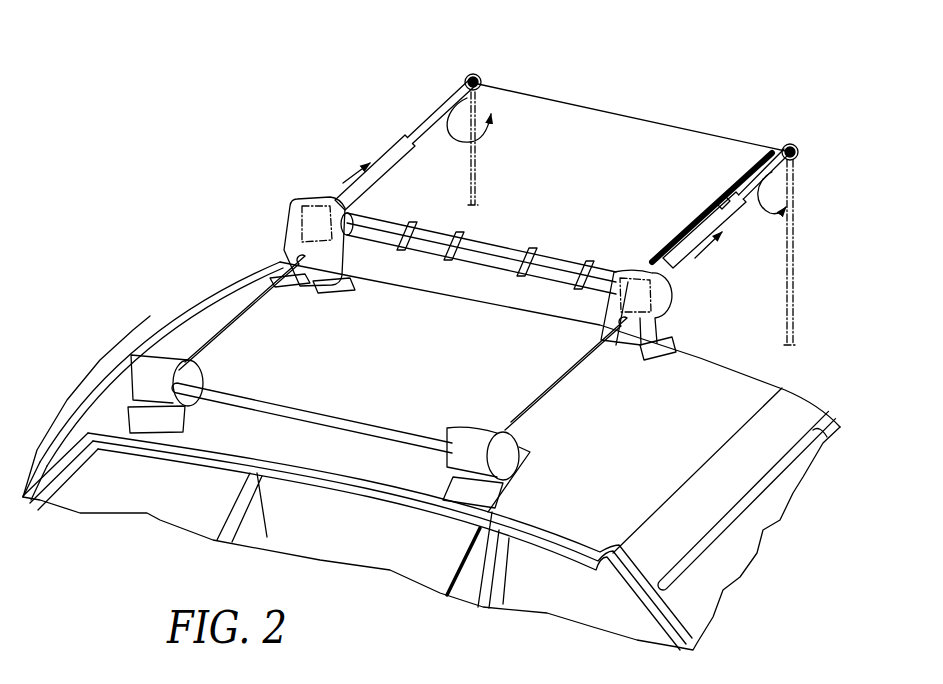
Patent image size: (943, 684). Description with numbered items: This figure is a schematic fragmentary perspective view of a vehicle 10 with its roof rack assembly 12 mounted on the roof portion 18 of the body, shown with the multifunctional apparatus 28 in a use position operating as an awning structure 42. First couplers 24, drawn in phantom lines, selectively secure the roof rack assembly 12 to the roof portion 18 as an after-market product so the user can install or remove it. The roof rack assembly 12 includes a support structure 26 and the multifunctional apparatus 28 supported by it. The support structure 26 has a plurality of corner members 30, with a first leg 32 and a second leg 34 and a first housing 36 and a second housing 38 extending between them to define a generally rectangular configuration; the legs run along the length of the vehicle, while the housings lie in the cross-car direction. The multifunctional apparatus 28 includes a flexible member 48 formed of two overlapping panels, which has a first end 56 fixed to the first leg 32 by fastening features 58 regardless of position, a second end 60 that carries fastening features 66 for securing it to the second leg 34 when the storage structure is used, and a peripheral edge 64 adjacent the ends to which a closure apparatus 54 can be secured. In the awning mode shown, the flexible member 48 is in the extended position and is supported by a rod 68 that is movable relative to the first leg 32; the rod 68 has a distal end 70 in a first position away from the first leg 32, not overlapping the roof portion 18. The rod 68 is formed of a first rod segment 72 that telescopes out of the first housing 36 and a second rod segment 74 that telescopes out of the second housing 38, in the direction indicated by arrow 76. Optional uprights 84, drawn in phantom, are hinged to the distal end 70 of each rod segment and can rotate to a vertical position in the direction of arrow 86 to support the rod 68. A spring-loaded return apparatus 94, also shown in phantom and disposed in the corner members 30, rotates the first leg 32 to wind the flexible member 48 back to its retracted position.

The vehicle 10 is at (736, 621).
The roof rack assembly 12 is at (105, 330).
The roof portion 18 is at (663, 470).
The first couplers 24 is at (133, 395).
The support structure 26 is at (268, 236).
The multifunctional apparatus 28 is at (235, 172).
The corner members 30 is at (314, 197).
The first leg 32 is at (497, 268).
The second leg 34 is at (345, 417).
The first housing 36 is at (572, 405).
The second housing 38 is at (252, 314).
The awning structure 42 is at (715, 75).
The flexible member 48 is at (535, 108).
The closure apparatus 54 is at (775, 150).
The first end 56 is at (443, 240).
The fastening features 58 is at (587, 265).
The second end 60 is at (655, 120).
The peripheral edge 64 is at (768, 150).
The fastening features 66 is at (482, 85).
The rod 68 is at (455, 85).
The distal end 70 is at (474, 78).
The first rod segment 72 is at (437, 110).
The second rod segment 74 is at (395, 148).
The arrow 76 is at (350, 178).
The uprights 84 is at (477, 180).
The arrow 86 is at (450, 125).
The return apparatus 94 is at (300, 207).